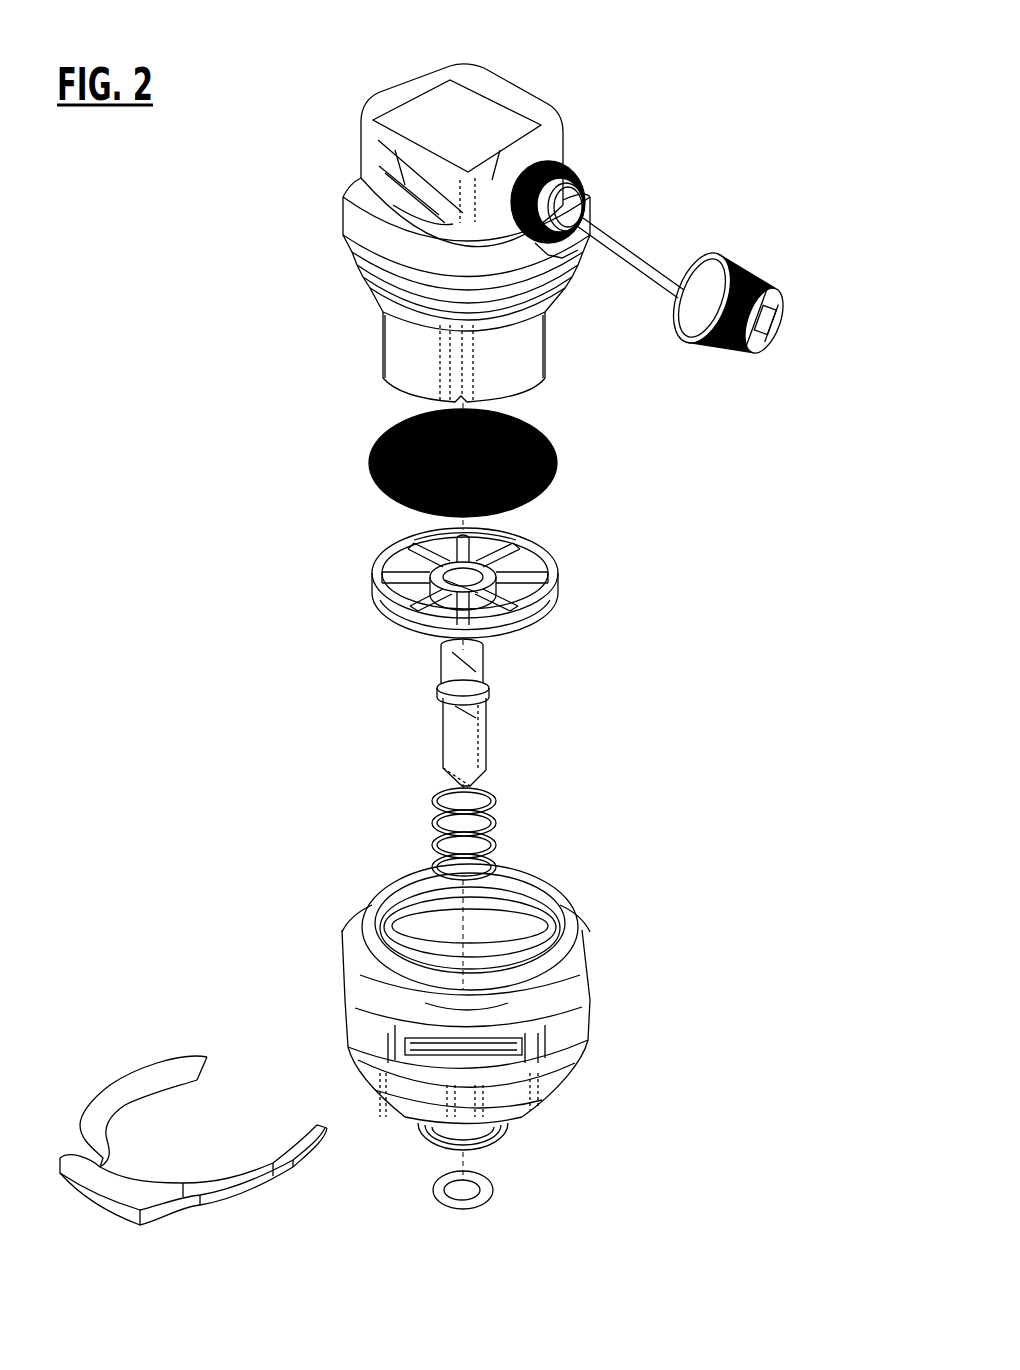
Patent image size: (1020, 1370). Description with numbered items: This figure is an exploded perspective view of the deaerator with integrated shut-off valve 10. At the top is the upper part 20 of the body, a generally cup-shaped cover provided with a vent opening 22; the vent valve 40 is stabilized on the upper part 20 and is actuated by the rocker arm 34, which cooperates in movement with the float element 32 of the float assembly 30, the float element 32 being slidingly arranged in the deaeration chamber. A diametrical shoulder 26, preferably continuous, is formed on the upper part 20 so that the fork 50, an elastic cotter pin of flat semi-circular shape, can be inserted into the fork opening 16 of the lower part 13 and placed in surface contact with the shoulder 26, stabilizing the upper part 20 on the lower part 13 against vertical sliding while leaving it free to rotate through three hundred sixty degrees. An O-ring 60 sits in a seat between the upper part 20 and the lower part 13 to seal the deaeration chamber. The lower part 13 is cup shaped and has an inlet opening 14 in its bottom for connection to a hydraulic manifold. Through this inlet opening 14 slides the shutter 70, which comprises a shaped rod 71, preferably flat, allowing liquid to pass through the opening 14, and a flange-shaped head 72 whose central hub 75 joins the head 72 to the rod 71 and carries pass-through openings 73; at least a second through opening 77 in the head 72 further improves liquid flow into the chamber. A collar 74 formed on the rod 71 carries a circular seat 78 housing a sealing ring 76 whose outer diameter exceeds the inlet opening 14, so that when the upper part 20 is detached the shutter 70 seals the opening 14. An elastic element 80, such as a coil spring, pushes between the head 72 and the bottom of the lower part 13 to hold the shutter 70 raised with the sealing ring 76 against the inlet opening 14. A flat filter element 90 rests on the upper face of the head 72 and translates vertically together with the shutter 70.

The deaerator with integrated shut-off valve 10 is at (558, 67).
The lower part of the body 13 is at (590, 939).
The inlet opening 14 is at (540, 1129).
The fork opening 16 is at (595, 1016).
The upper part of the body 20 is at (363, 147).
The vent opening 22 is at (587, 184).
The diametrical shoulder 26 is at (362, 277).
The float assembly 30 is at (385, 361).
The float element 32 is at (548, 351).
The rocker arm 34 is at (640, 257).
The vent valve 40 is at (775, 280).
The fork 50 is at (240, 1199).
The O-ring 60 is at (443, 1007).
The shutter 70 is at (476, 585).
The shaped rod 71 is at (483, 747).
The head 72 is at (378, 591).
The pass-through openings 73 is at (420, 574).
The collar 74 is at (488, 675).
The central hub 75 is at (540, 551).
The sealing ring 76 is at (495, 1197).
The second through opening 77 is at (383, 569).
The circular seat 78 is at (438, 691).
The elastic element 80 is at (435, 804).
The filter element 90 is at (558, 467).